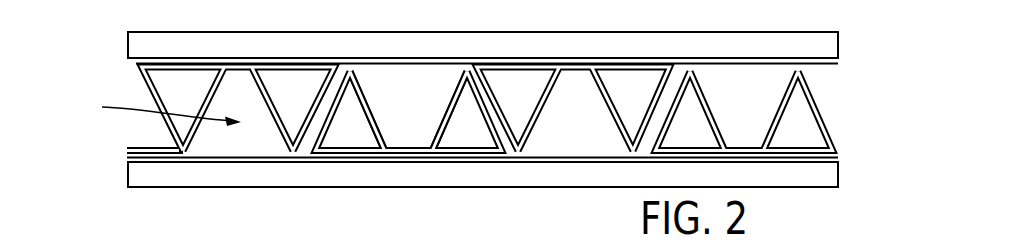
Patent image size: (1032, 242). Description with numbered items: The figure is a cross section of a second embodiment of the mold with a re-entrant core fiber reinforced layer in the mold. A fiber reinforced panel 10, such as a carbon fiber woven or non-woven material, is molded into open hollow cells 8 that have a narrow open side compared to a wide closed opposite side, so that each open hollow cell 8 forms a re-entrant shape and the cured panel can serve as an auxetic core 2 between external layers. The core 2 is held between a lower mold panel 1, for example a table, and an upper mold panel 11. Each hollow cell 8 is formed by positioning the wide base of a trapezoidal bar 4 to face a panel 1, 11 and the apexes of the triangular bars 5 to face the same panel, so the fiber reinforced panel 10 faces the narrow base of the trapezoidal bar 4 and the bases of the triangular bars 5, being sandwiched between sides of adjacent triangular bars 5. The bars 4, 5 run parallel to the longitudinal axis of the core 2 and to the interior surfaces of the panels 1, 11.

The lower mold panel 1 is at (142, 173).
The core 2 is at (502, 150).
The trapezoidal bar 4 is at (402, 120).
The triangular bar 5 is at (342, 128).
The open hollow cell 8 is at (161, 110).
The fiber reinforced panel 10 is at (840, 158).
The upper mold panel 11 is at (142, 46).